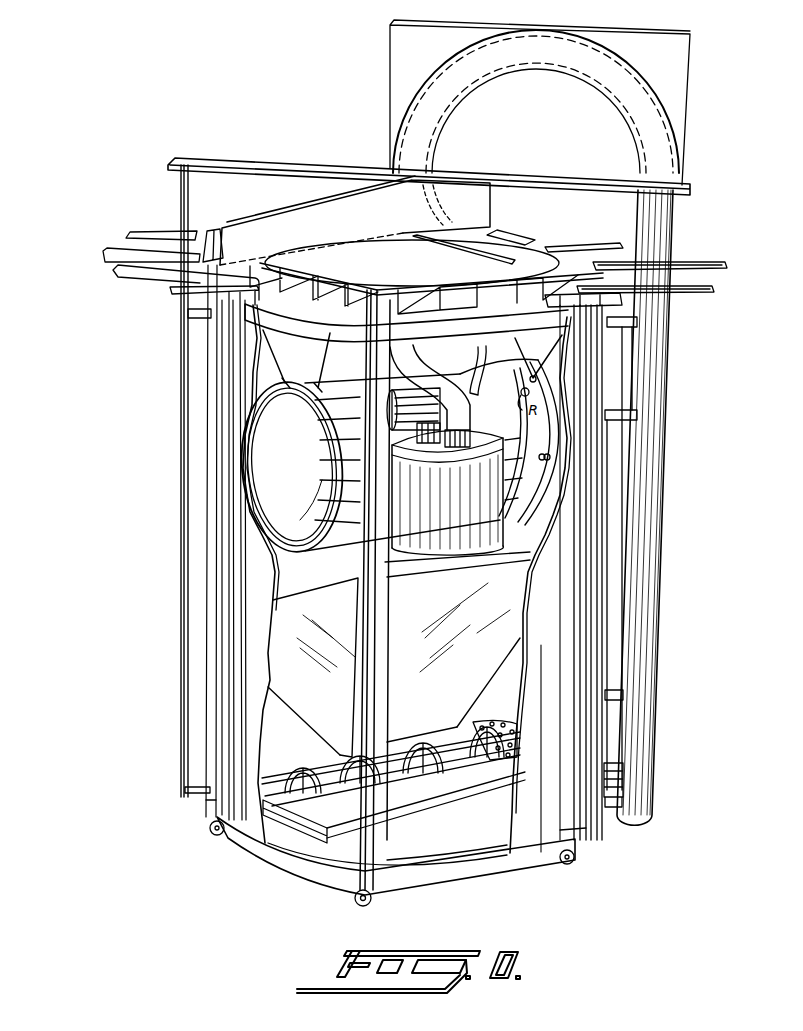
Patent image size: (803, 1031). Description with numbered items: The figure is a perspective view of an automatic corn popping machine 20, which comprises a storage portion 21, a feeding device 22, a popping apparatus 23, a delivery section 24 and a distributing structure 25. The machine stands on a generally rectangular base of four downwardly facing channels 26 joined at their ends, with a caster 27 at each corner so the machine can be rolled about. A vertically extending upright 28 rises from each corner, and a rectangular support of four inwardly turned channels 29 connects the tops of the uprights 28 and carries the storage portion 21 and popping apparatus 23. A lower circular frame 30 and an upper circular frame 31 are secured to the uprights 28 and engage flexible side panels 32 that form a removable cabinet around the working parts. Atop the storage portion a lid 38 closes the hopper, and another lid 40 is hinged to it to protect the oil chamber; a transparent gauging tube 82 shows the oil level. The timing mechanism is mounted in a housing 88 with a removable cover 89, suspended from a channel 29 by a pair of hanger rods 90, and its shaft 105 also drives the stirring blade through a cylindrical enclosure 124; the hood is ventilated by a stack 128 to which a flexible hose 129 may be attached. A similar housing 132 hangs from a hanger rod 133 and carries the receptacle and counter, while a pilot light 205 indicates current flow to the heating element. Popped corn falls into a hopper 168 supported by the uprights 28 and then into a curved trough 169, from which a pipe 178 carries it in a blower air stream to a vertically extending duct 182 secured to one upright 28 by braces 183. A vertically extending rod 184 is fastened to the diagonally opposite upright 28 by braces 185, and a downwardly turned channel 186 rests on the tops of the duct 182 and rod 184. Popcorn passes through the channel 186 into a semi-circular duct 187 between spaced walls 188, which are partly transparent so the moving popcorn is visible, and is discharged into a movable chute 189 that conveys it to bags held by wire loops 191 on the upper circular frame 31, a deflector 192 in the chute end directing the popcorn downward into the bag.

The corn popping machine 20 is at (163, 540).
The storage portion 21 is at (321, 350).
The feeding device 22 is at (420, 408).
The popping apparatus 23 is at (515, 545).
The delivery section 24 is at (489, 704).
The distributing structure 25 is at (500, 207).
The channels 26 is at (312, 864).
The caster 27 is at (210, 835).
The upright 28 is at (380, 678).
The channels 29 is at (325, 280).
The lower circular frame 30 is at (457, 850).
The upper circular frame 31 is at (490, 343).
The side panels 32 is at (269, 655).
The lid 38 is at (369, 265).
The lid 40 is at (523, 255).
The gauging tube 82 is at (432, 455).
The housing 88 is at (316, 556).
The removable cover 89 is at (277, 456).
The hanger rods 90 is at (277, 384).
The shaft 105 is at (428, 445).
The cylindrical enclosure 124 is at (443, 460).
The stack 128 is at (460, 450).
The flexible hose 129 is at (417, 347).
The housing 132 is at (545, 390).
The hanger rod 133 is at (514, 352).
The hopper 168 is at (316, 738).
The curved trough 169 is at (446, 800).
The pipe 178 is at (610, 813).
The duct 182 is at (660, 550).
The braces 183 is at (637, 337).
The rod 184 is at (181, 392).
The braces 185 is at (195, 313).
The channel 186 is at (250, 158).
The semi-circular duct 187 is at (457, 110).
The walls 188 is at (480, 25).
The movable chute 189 is at (308, 200).
The wire loops 191 is at (103, 251).
The deflector 192 is at (210, 230).
The pilot light 205 is at (545, 455).